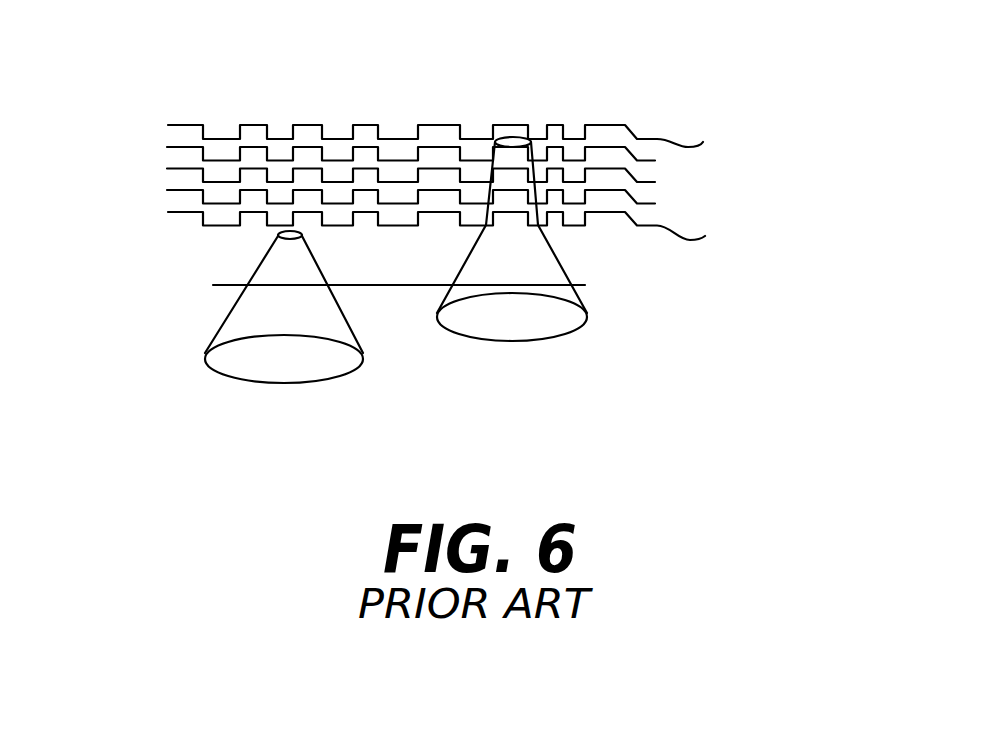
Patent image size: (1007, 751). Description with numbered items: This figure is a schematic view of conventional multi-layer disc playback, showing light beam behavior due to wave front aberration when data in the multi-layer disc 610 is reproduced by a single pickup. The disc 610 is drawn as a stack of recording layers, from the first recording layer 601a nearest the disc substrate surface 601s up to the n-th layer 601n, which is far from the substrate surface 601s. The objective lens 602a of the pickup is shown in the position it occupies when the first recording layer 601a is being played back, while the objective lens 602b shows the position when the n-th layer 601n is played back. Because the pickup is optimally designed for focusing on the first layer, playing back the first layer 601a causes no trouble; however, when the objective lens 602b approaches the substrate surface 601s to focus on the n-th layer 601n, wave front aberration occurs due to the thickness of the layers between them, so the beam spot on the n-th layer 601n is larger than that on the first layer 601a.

The multi-layer disc 610 is at (556, 96).
The n-th layer 601n is at (170, 125).
The first recording layer 601a is at (170, 212).
The disc substrate surface 601s is at (215, 285).
The objective lens 602a is at (243, 382).
The objective lens 602b is at (498, 342).